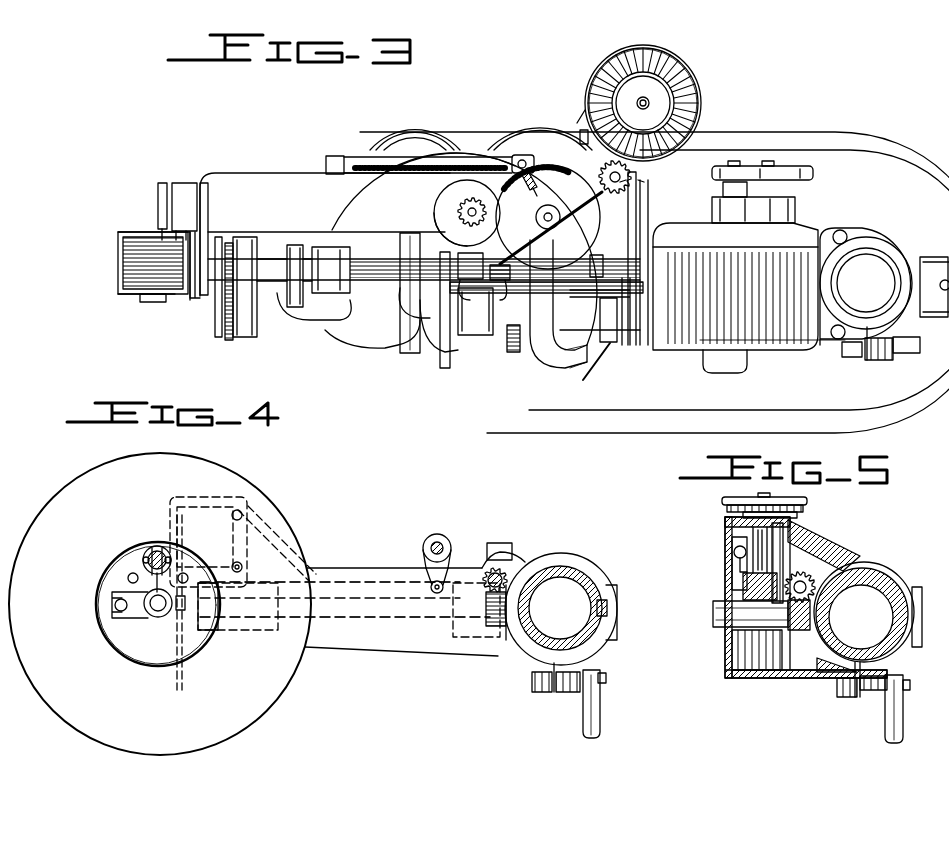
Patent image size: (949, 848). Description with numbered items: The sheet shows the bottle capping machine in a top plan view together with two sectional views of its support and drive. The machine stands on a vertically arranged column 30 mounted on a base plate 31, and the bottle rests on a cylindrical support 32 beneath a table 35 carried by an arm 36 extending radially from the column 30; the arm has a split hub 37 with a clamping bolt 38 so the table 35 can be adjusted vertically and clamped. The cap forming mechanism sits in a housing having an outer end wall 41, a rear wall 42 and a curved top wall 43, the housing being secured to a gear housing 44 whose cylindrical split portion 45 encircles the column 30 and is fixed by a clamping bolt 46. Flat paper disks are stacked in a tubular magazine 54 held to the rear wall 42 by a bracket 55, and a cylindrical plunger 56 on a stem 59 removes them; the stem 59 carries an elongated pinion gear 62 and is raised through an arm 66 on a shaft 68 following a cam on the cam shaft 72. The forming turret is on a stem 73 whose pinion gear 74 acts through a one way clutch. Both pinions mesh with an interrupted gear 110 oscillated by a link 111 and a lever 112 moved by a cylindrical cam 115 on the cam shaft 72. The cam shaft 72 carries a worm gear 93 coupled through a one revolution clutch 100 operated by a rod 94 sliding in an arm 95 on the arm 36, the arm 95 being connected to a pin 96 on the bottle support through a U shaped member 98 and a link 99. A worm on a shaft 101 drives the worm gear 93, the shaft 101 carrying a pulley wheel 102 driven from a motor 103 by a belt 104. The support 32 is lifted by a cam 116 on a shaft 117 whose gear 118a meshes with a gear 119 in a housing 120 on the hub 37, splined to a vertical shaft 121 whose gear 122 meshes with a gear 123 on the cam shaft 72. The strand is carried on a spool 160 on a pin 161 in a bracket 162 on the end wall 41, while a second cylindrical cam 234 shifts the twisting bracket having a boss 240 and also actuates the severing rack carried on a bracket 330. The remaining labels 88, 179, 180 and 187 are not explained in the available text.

In FIG. 3, the column 30 is at (885, 250).
In FIG. 4, the column 30 is at (590, 577).
In FIG. 5, the column 30 is at (893, 580).
In FIG. 3, the base plate 31 is at (603, 430).
In FIG. 4, the cylindrical support 32 is at (158, 604).
In FIG. 3, the table 35 is at (437, 418).
In FIG. 4, the table 35 is at (252, 500).
In FIG. 4, the arm 36 is at (372, 568).
In FIG. 4, the split hub 37 is at (592, 656).
In FIG. 4, the clamping bolt 38 is at (600, 720).
In FIG. 3, the outer end wall 41 is at (204, 296).
In FIG. 3, the rear wall 42 is at (942, 322).
In FIG. 3, the curved top wall 43 is at (330, 222).
In FIG. 3, the gear housing 44 is at (815, 345).
In FIG. 5, the gear housing 44 is at (800, 535).
In FIG. 3, the cylindrical split portion 45 is at (873, 232).
In FIG. 5, the cylindrical split portion 45 is at (895, 662).
In FIG. 5, the clamping bolt 46 is at (885, 725).
In FIG. 3, the tubular magazine 54 is at (700, 85).
In FIG. 3, the bracket 55 is at (585, 110).
In FIG. 3, the cylindrical plunger 56 is at (643, 103).
In FIG. 3, the stem 59 is at (602, 168).
In FIG. 3, the elongated pinion gear 62 is at (630, 213).
In FIG. 3, the arm 66 is at (648, 223).
In FIG. 3, the shaft 68 is at (518, 256).
In FIG. 3, the cam shaft 72 is at (357, 285).
In FIG. 5, the cam shaft 72 is at (713, 612).
In FIG. 3, the stem 73 is at (472, 224).
In FIG. 3, the pinion gear 74 is at (472, 198).
In FIG. 3, the wheel rim 88 is at (698, 100).
In FIG. 5, the worm gear 93 is at (780, 570).
In FIG. 4, the rod 94 is at (437, 534).
In FIG. 5, the rod 94 is at (734, 552).
In FIG. 4, the arm 95 is at (452, 548).
In FIG. 4, the pin 96 is at (143, 560).
In FIG. 4, the U shaped member 98 is at (187, 500).
In FIG. 4, the link 99 is at (274, 548).
In FIG. 5, the clutch 100 is at (745, 588).
In FIG. 5, the shaft 101 is at (745, 540).
In FIG. 3, the pulley wheel 102 is at (805, 175).
In FIG. 5, the pulley wheel 102 is at (722, 502).
In FIG. 3, the driving motor 103 is at (682, 223).
In FIG. 3, the belt 104 is at (812, 172).
In FIG. 3, the interrupted gear 110 is at (580, 208).
In FIG. 3, the link 111 is at (470, 157).
In FIG. 3, the lever 112 is at (322, 165).
In FIG. 3, the cylindrical cam 115 is at (398, 315).
In FIG. 4, the cam 116 is at (182, 678).
In FIG. 4, the shaft 117 is at (398, 617).
In FIG. 4, the gear 118a is at (488, 632).
In FIG. 4, the gear 119 is at (486, 594).
In FIG. 4, the housing 120 is at (495, 555).
In FIG. 4, the vertically extending shaft 121 is at (505, 572).
In FIG. 5, the gear 122 is at (812, 580).
In FIG. 5, the gear 123 is at (800, 632).
In FIG. 3, the spool 160 is at (118, 290).
In FIG. 3, the pin 161 is at (152, 302).
In FIG. 3, the bracket 162 is at (192, 298).
In FIG. 3, the collar 179 is at (295, 245).
In FIG. 3, the hub 180 is at (385, 272).
In FIG. 3, the disc 187 is at (249, 238).
In FIG. 3, the cylindrical cam 234 is at (540, 362).
In FIG. 3, the hub or boss 240 is at (622, 342).
In FIG. 3, the bracket 330 is at (485, 336).